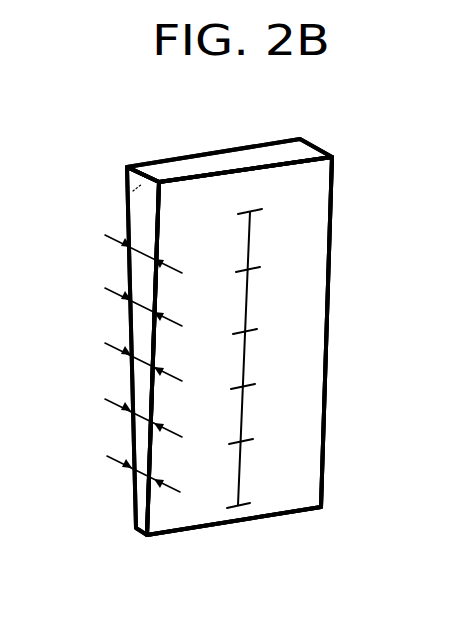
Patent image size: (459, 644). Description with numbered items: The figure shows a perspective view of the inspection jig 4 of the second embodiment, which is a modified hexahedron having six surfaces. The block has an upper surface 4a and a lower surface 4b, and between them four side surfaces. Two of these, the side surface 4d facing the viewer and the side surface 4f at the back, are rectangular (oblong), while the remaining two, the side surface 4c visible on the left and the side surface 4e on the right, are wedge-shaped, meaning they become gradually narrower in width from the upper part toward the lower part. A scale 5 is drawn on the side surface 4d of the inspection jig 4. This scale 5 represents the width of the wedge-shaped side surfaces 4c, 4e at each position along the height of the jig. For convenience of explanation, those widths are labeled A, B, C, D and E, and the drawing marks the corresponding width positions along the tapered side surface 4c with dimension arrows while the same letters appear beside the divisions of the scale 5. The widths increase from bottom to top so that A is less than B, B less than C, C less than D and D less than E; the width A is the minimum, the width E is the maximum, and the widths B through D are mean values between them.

The inspection jig 4 is at (326, 137).
The upper surface 4a is at (225, 160).
The lower surface 4b is at (263, 520).
The wedge-shaped side surface 4c is at (137, 498).
The rectangular side surface 4d is at (310, 297).
The wedge-shaped side surface 4e is at (328, 245).
The rectangular side surface 4f is at (127, 193).
The scale 5 is at (247, 367).
The width A is at (145, 469).
The width B is at (145, 413).
The width C is at (145, 357).
The width D is at (145, 301).
The width E is at (145, 246).